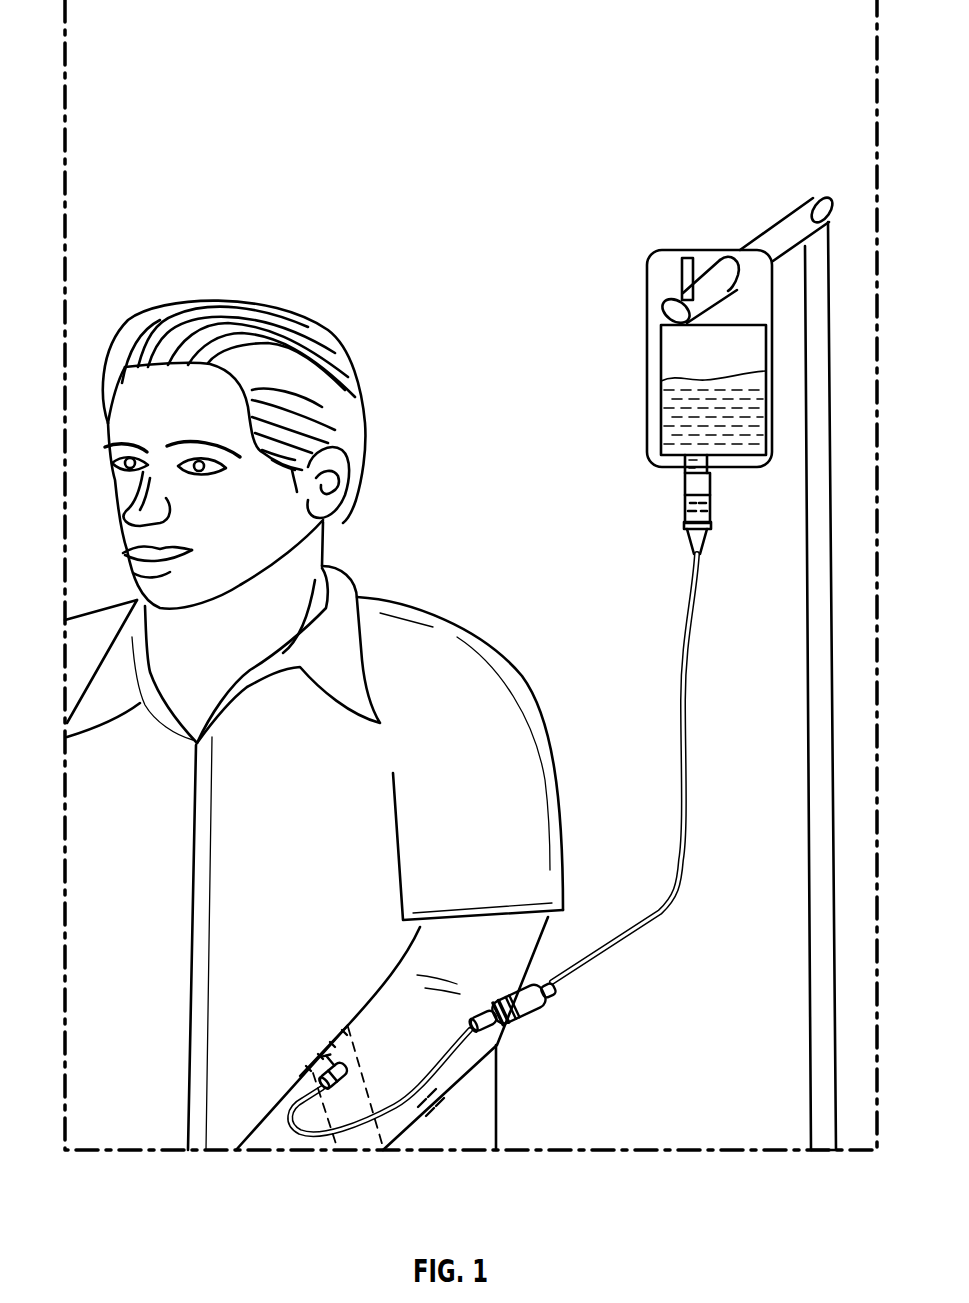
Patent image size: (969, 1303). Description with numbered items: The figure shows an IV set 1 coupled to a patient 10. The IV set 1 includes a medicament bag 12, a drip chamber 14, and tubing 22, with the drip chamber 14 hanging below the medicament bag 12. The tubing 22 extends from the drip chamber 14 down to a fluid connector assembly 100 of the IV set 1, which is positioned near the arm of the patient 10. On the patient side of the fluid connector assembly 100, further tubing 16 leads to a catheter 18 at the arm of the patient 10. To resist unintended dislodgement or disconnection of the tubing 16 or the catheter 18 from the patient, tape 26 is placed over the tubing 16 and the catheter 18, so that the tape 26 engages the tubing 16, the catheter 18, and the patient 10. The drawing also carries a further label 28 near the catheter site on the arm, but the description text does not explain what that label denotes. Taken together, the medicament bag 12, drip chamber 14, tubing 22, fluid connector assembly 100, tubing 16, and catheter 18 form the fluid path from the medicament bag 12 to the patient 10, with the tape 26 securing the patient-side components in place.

The IV set 1 is at (615, 252).
The patient 10 is at (423, 604).
The medicament bag 12 is at (647, 362).
The drip chamber 14 is at (683, 490).
The tubing 16 is at (457, 1041).
The catheter 18 is at (306, 1071).
The tubing 22 is at (682, 638).
The tape 26 is at (343, 1028).
The tape 28 is at (421, 1117).
The fluid connector assembly 100 is at (532, 1018).